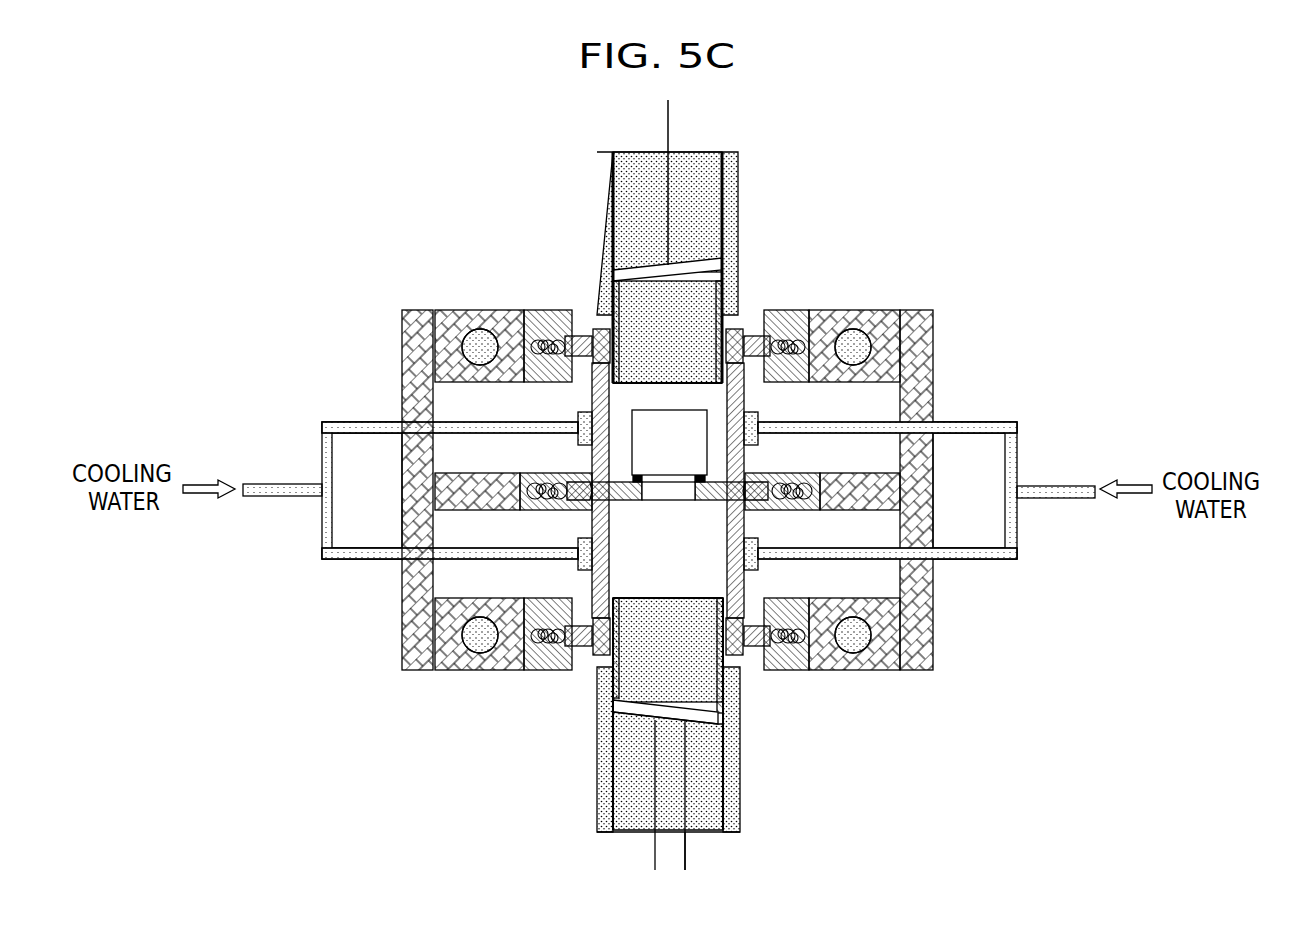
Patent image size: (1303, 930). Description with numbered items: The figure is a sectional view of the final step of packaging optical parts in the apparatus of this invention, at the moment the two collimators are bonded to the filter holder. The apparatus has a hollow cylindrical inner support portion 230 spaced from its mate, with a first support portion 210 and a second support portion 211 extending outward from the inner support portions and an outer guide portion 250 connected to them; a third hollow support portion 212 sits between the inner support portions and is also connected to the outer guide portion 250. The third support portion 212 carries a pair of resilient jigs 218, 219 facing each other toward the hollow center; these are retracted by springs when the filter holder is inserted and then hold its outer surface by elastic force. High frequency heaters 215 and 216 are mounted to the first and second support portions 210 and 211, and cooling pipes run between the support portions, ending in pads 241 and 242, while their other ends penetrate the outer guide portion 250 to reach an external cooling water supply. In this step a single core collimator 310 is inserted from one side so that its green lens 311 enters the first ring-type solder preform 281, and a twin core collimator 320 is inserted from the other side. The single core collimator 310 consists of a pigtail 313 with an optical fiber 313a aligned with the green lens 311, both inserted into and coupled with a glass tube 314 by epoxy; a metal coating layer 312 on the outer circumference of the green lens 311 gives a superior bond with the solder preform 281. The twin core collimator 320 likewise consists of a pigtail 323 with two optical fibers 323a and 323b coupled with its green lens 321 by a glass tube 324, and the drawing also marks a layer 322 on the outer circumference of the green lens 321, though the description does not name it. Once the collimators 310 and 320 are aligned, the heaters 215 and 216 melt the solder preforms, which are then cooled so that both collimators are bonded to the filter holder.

The first support portion 210 is at (456, 318).
The second support portion 211 is at (450, 603).
The third hollow support portion 212 is at (473, 508).
The high frequency heater 215 is at (480, 330).
The high frequency heater 216 is at (480, 650).
The resilient jig 218 is at (573, 470).
The resilient jig 219 is at (765, 473).
The inner support portion 230 is at (545, 672).
The pad 241 is at (578, 420).
The pad 242 is at (580, 545).
The outer guide portion 250 is at (413, 670).
The first ring-type solder preform 281 is at (745, 330).
The single core collimator 310 is at (673, 241).
The green lens 311 is at (640, 313).
The metal coating layer 312 is at (600, 322).
The pigtail 313 is at (707, 173).
The optical fiber 313a is at (668, 118).
The glass tube 314 is at (602, 160).
The twin core collimator 320 is at (690, 749).
The green lens 321 is at (715, 690).
The inclined plate 322 is at (608, 700).
The pigtail 323 is at (630, 798).
The optical fiber 323a is at (655, 852).
The optical fiber 323b is at (683, 845).
The glass tube 324 is at (730, 798).